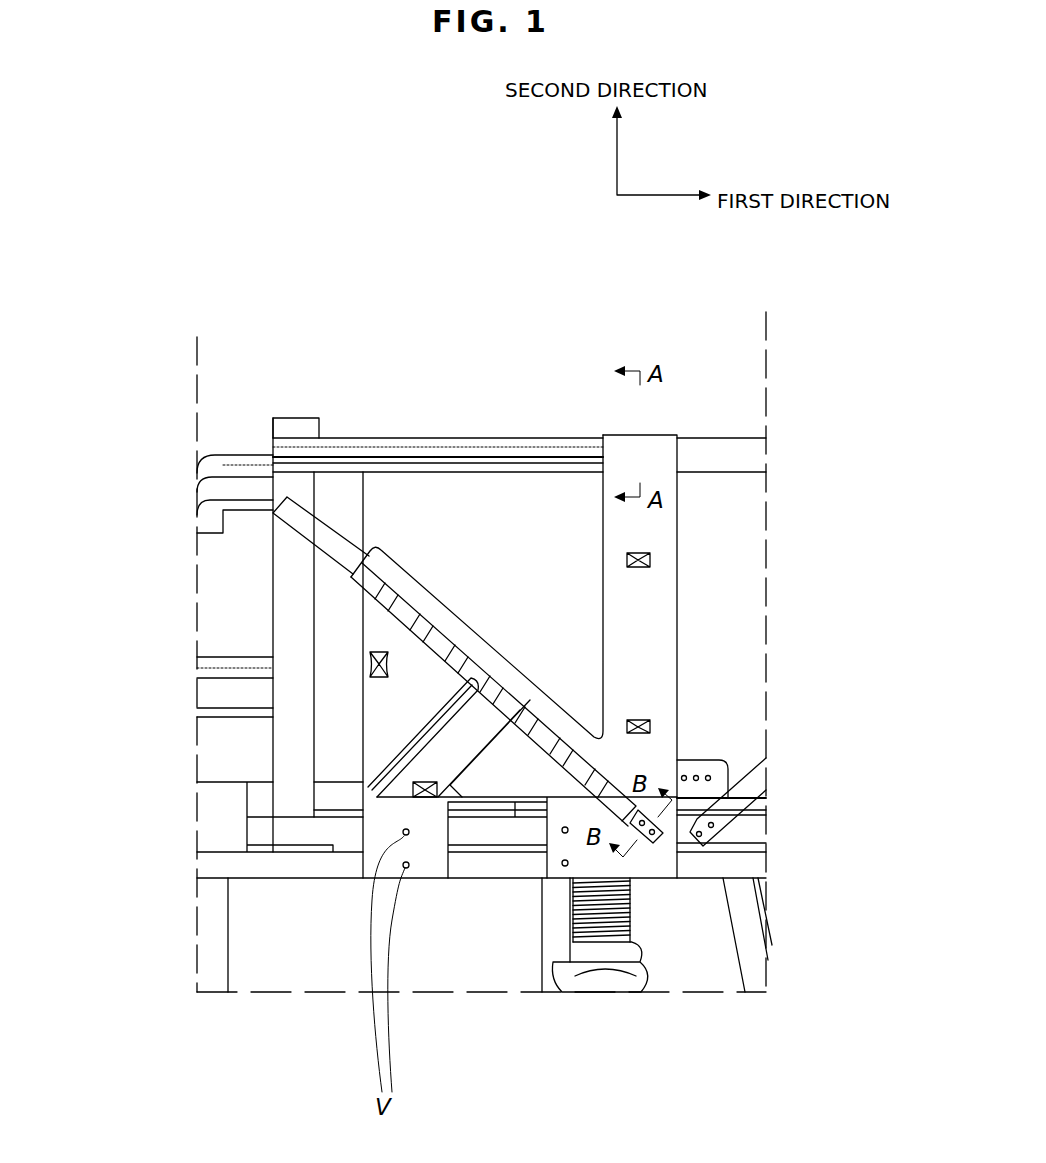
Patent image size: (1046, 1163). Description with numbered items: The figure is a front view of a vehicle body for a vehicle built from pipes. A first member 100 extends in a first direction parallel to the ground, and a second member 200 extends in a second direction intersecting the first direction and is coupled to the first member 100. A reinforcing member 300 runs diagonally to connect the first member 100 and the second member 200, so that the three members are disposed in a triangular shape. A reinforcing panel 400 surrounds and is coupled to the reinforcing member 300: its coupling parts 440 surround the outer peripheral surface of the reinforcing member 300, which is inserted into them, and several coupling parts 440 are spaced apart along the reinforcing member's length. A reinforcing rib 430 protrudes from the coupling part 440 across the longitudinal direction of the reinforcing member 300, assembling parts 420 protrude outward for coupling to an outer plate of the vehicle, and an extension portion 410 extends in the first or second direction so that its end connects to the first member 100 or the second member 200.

The first member 100 is at (520, 453).
The second member 200 is at (298, 428).
The reinforcing member 300 is at (341, 558).
The reinforcing panel 400 is at (479, 624).
The extension portion 410 is at (657, 460).
The assembling part 420 is at (650, 563).
The reinforcing rib 430 is at (410, 752).
The coupling part 440 is at (442, 645).